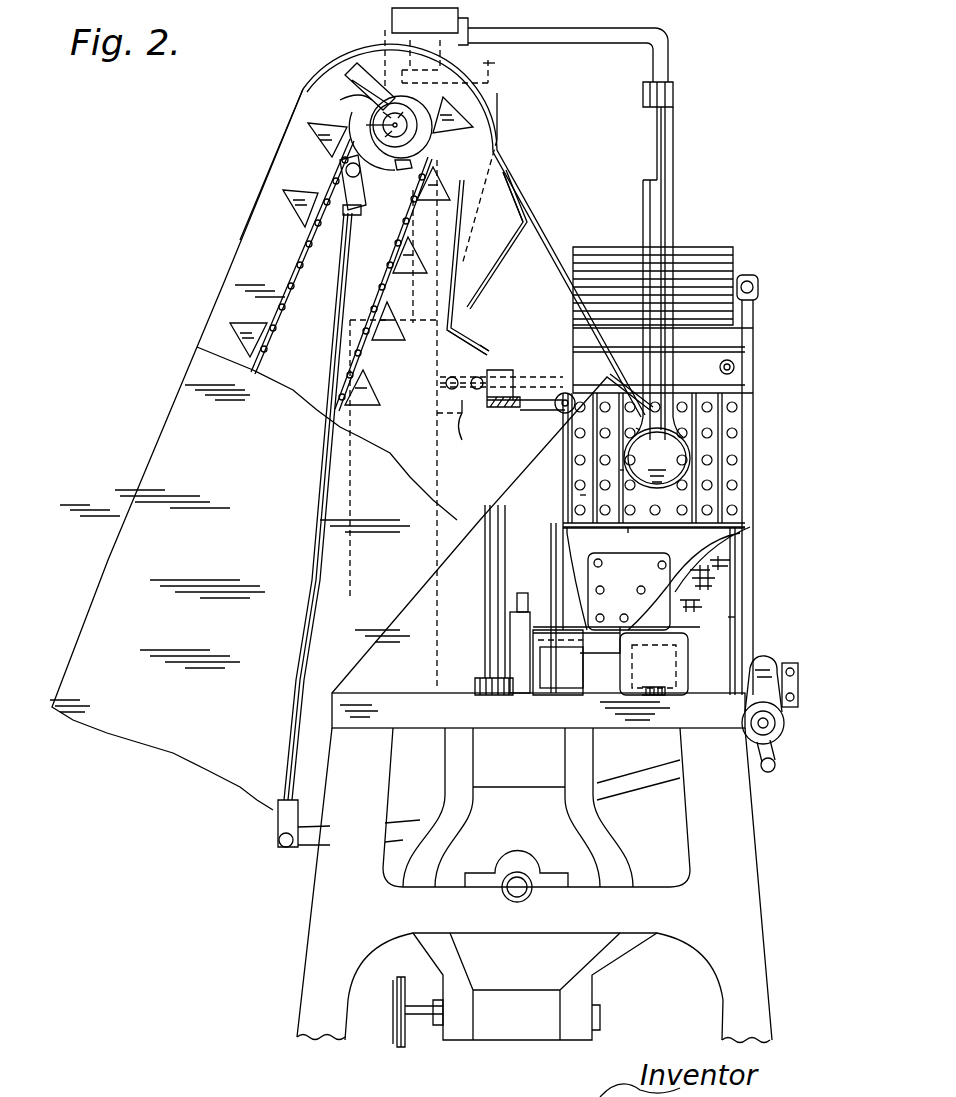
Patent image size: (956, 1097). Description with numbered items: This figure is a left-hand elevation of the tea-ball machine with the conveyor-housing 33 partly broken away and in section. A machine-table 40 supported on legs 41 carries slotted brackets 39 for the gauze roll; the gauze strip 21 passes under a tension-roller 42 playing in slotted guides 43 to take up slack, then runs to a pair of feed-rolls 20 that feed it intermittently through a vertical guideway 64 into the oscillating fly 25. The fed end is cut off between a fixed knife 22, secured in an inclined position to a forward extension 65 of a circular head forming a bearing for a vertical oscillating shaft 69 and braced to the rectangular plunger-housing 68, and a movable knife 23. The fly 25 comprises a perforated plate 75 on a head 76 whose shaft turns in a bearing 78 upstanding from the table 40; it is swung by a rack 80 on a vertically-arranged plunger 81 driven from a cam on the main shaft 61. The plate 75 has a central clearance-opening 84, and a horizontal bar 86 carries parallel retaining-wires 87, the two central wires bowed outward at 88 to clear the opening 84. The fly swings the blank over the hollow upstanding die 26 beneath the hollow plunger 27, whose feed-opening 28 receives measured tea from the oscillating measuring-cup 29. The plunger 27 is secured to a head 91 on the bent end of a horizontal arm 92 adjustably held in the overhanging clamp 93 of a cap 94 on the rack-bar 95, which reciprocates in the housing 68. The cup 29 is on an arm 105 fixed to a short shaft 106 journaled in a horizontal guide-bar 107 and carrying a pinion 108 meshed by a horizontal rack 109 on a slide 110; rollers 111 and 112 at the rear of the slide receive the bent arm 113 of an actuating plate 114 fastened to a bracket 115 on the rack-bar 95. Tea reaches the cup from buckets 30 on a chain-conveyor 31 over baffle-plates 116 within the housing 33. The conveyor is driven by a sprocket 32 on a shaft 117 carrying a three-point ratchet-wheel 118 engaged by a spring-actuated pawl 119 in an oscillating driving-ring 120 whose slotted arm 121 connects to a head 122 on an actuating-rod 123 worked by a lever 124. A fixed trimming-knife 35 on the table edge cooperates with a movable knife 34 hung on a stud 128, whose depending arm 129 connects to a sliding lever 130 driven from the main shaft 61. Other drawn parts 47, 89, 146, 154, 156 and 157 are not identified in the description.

The feed-rolls 20 is at (707, 257).
The gauze strip 21 is at (706, 570).
The fixed knife 22 is at (728, 345).
The movable knife 23 is at (740, 395).
The oscillating fly 25 is at (740, 522).
The hollow upstanding die 26 is at (682, 666).
The hollow plunger 27 is at (670, 213).
The feed-opening 28 is at (658, 166).
The oscillating measuring-cup 29 is at (505, 380).
The buckets 30 is at (318, 232).
The chain-conveyor 31 is at (396, 237).
The sprocket-wheel 32 is at (400, 165).
The conveyor-housing 33 is at (172, 417).
The movable trimming-knife 34 is at (766, 662).
The fixed trimming-knife 35 is at (798, 686).
The slotted brackets 39 is at (750, 444).
The machine-table 40 is at (538, 710).
The legs 41 is at (318, 936).
The tension-roller 42 is at (736, 620).
The slotted guides 43 is at (572, 582).
The housing block 47 is at (560, 642).
The main shaft 61 is at (515, 888).
The vertical guideway 64 is at (737, 328).
The forward extension 65 is at (737, 367).
The rectangular plunger-housing 68 is at (432, 638).
The oscillating shaft 69 is at (488, 605).
The perforated plate 75 is at (735, 476).
The head 76 is at (629, 591).
The bearing 78 is at (570, 680).
The rack 80 is at (524, 600).
The vertically-arranged plunger 81 is at (514, 657).
The central clearance-opening 84 is at (657, 480).
The horizontal bar 86 is at (627, 527).
The retaining-wires 87 is at (580, 495).
The outwardly bowed portion 88 is at (690, 450).
The plate strip 89 is at (638, 428).
The head 91 is at (675, 85).
The horizontal arm 92 is at (573, 36).
The overhanging clamp 93 is at (467, 26).
The cap 94 is at (375, 32).
The rack-bar 95 is at (432, 272).
The arm 105 is at (530, 410).
The short shaft 106 is at (575, 395).
The horizontal guide-bar 107 is at (465, 405).
The pinion 108 is at (560, 382).
The horizontal rack 109 is at (548, 375).
The slide 110 is at (418, 425).
The roller 111 is at (452, 376).
The roller 112 is at (472, 358).
The bent arm 113 is at (507, 180).
The actuating plate 114 is at (498, 93).
The bracket 115 is at (483, 63).
The baffle-plates 116 is at (504, 248).
The shaft 117 is at (393, 127).
The three-point ratchet-wheel 118 is at (425, 150).
The spring-actuated pawl 119 is at (340, 100).
The oscillating driving-ring 120 is at (397, 93).
The slotted arm 121 is at (340, 172).
The head 122 is at (360, 205).
The actuating-rod 123 is at (316, 556).
The lever 124 is at (300, 845).
The stud 128 is at (770, 726).
The depending arm 129 is at (778, 752).
The sliding lever 130 is at (645, 787).
The motor housing arch 146 is at (430, 948).
The pedestal 154 is at (610, 855).
The motor shaft 156 is at (422, 1016).
The pulley 157 is at (400, 1048).